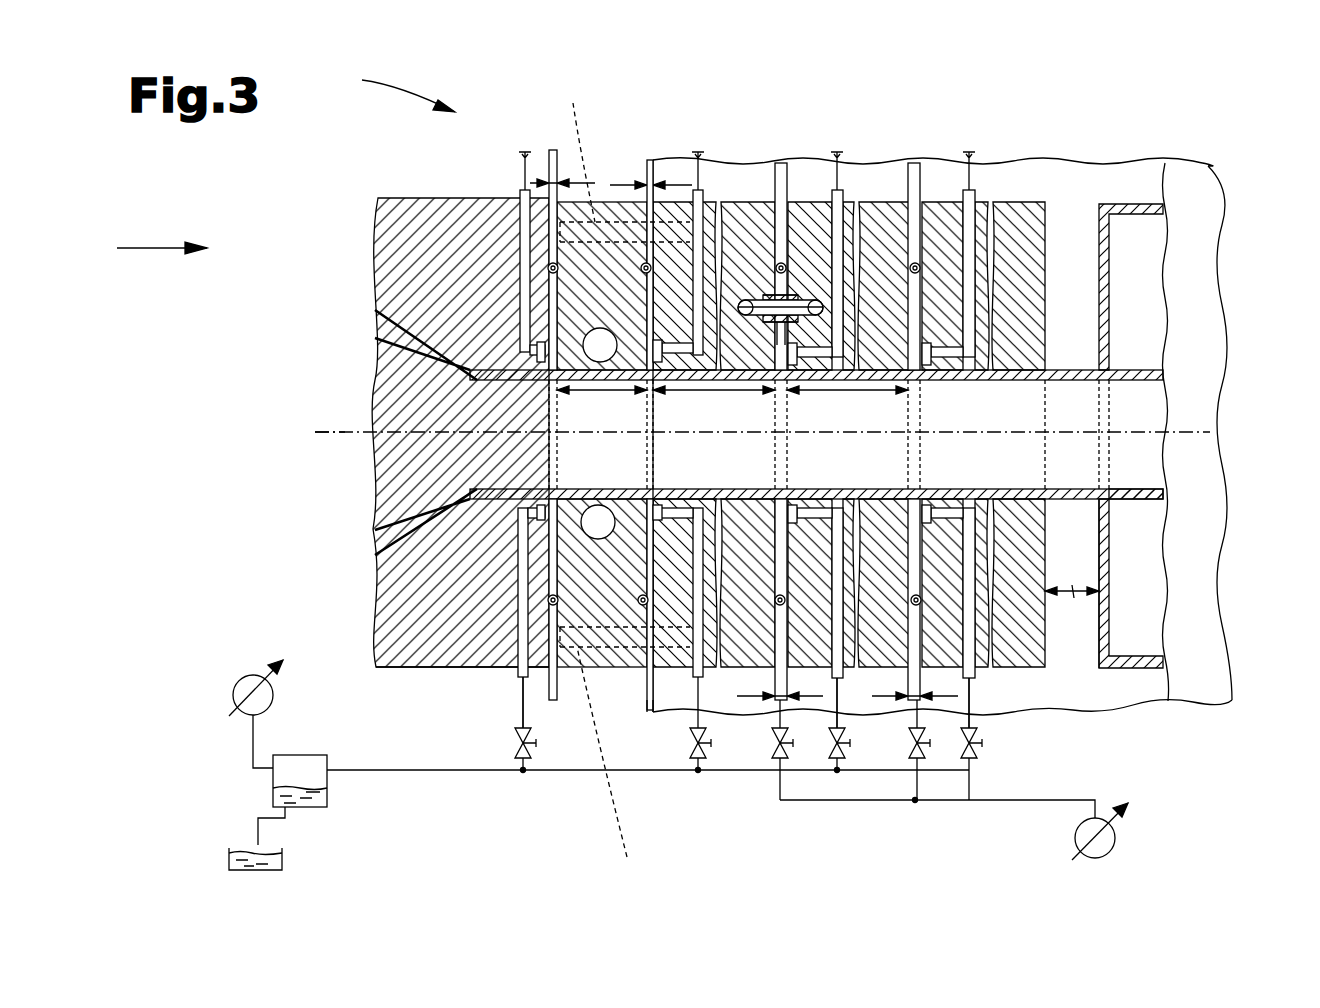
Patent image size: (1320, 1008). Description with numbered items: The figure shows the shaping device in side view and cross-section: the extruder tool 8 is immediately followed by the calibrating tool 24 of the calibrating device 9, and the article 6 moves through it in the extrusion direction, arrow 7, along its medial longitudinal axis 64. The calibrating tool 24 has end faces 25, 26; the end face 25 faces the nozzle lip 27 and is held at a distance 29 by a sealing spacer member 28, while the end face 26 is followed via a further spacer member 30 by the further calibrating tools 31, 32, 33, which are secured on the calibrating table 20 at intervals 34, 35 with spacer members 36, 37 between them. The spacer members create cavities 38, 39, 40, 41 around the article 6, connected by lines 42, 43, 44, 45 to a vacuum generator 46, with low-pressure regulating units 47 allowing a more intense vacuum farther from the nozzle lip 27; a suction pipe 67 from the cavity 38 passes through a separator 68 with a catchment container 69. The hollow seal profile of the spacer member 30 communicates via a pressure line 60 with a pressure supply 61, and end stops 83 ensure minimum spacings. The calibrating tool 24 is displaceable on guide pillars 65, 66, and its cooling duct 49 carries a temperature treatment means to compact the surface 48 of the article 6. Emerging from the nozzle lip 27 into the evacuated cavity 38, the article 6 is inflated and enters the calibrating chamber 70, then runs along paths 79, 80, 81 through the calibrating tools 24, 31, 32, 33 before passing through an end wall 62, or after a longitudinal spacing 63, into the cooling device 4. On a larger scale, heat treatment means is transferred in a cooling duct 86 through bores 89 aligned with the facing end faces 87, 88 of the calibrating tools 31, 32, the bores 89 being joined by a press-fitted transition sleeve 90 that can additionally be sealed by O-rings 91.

The cooling device 4 is at (1179, 628).
The article 6 is at (1121, 499).
The extrusion direction 7 is at (143, 246).
The extruder tool 8 is at (433, 602).
The calibrating device 9 is at (397, 85).
The calibrating table 20 is at (1195, 198).
The calibrating tool 24 is at (612, 200).
The end face 25 is at (550, 285).
The end face 26 is at (530, 560).
The nozzle lip 27 is at (545, 442).
The spacer member 28 is at (560, 183).
The distance 29 is at (553, 180).
The spacer member 30 is at (615, 197).
The calibrating tool 31 is at (653, 190).
The calibrating tool 32 is at (885, 202).
The calibrating tool 33 is at (1047, 202).
The interval 34 is at (795, 790).
The interval 35 is at (915, 802).
The spacer member 36 is at (770, 690).
The spacer member 37 is at (905, 700).
The cavity 38 is at (545, 650).
The cavity 39 is at (665, 700).
The cavity 40 is at (777, 345).
The cavity 41 is at (920, 323).
The line 42 is at (523, 190).
The line 43 is at (695, 190).
The line 44 is at (840, 190).
The line 45 is at (970, 190).
The vacuum generator 46 is at (240, 678).
The low-pressure regulating unit 47 is at (540, 775).
The surface 48 is at (1077, 365).
The cooling duct 49 is at (597, 535).
The pressure line 60 is at (983, 802).
The pressure supply 61 is at (1075, 837).
The end wall 62 is at (1100, 620).
The longitudinal spacing 63 is at (1073, 595).
The medial longitudinal axis 64 is at (327, 431).
The guide pillar 65 is at (578, 148).
The guide pillar 66 is at (611, 768).
The suction pipe 67 is at (486, 775).
The separator 68 is at (310, 767).
The catchment container 69 is at (283, 858).
The calibrating chamber 70 is at (440, 500).
The path 79 is at (745, 415).
The path 80 is at (828, 415).
The path 81 is at (653, 420).
The end stop 83 is at (552, 225).
The cooling duct 86 is at (780, 262).
The end face 87 is at (788, 295).
The end face 88 is at (760, 298).
The bore 89 is at (795, 320).
The transition sleeve 90 is at (790, 308).
The O-ring 91 is at (800, 322).